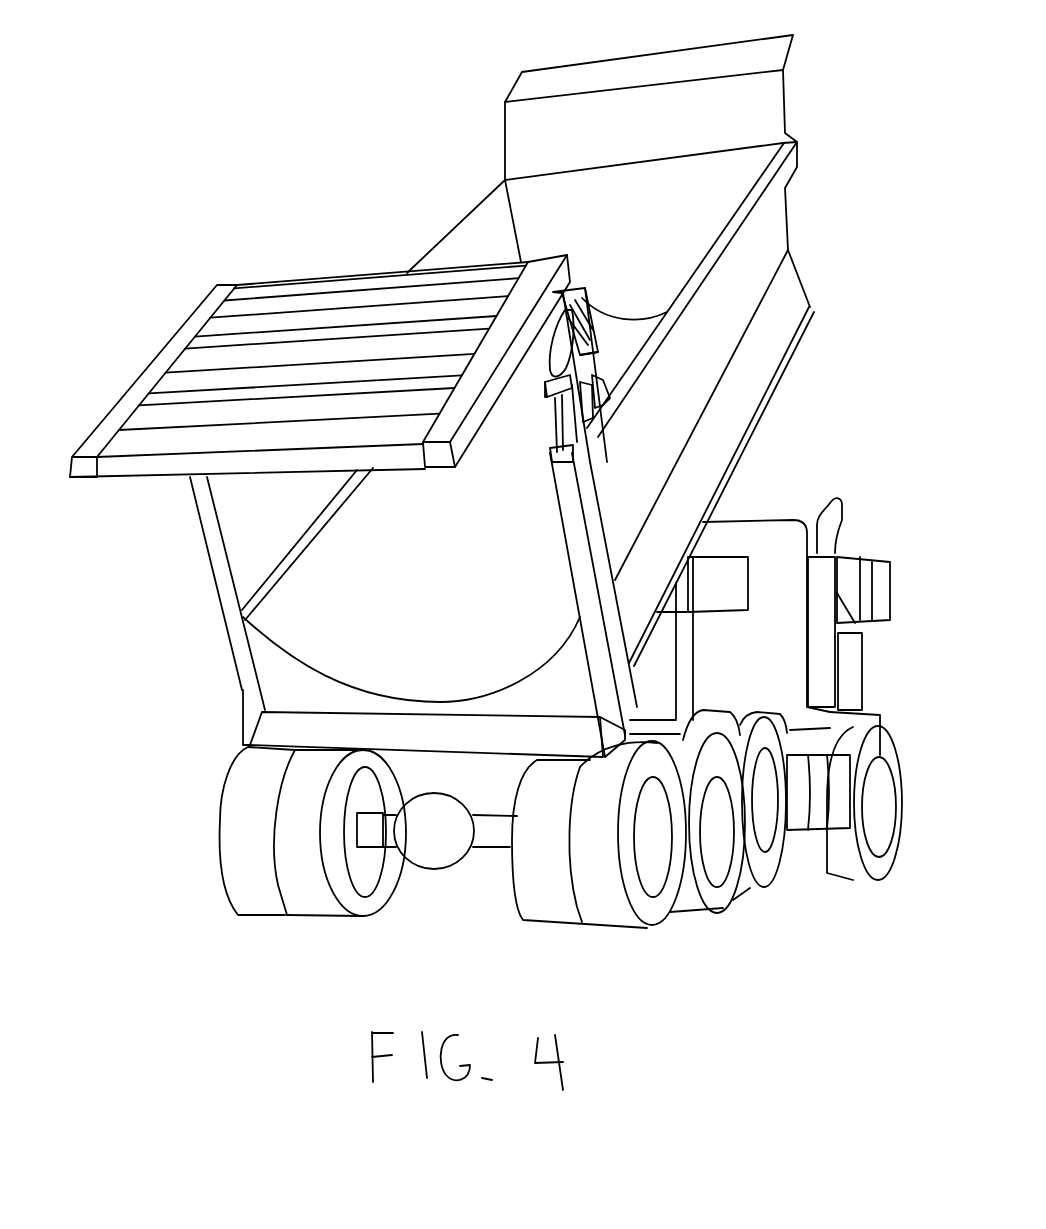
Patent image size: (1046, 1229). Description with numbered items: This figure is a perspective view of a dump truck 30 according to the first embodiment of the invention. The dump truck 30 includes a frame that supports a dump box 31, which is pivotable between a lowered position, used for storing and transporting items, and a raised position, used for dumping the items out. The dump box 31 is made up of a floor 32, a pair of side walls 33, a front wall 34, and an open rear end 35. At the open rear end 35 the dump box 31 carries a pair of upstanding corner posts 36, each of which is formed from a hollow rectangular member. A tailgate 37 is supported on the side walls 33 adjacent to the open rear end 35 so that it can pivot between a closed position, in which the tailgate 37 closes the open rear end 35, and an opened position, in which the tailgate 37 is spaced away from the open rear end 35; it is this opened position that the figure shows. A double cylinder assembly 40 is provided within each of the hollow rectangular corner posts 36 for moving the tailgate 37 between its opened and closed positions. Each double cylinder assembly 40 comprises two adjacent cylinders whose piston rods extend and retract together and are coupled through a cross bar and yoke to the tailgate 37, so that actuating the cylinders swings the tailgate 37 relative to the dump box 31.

The dump truck 30 is at (353, 122).
The dump box 31 is at (681, 117).
The floor 32 is at (456, 618).
The side walls 33 is at (727, 300).
The front wall 34 is at (690, 197).
The open rear end 35 is at (504, 733).
The corner posts 36 is at (229, 585).
The tailgate 37 is at (222, 365).
The double cylinder assembly 40 is at (545, 416).